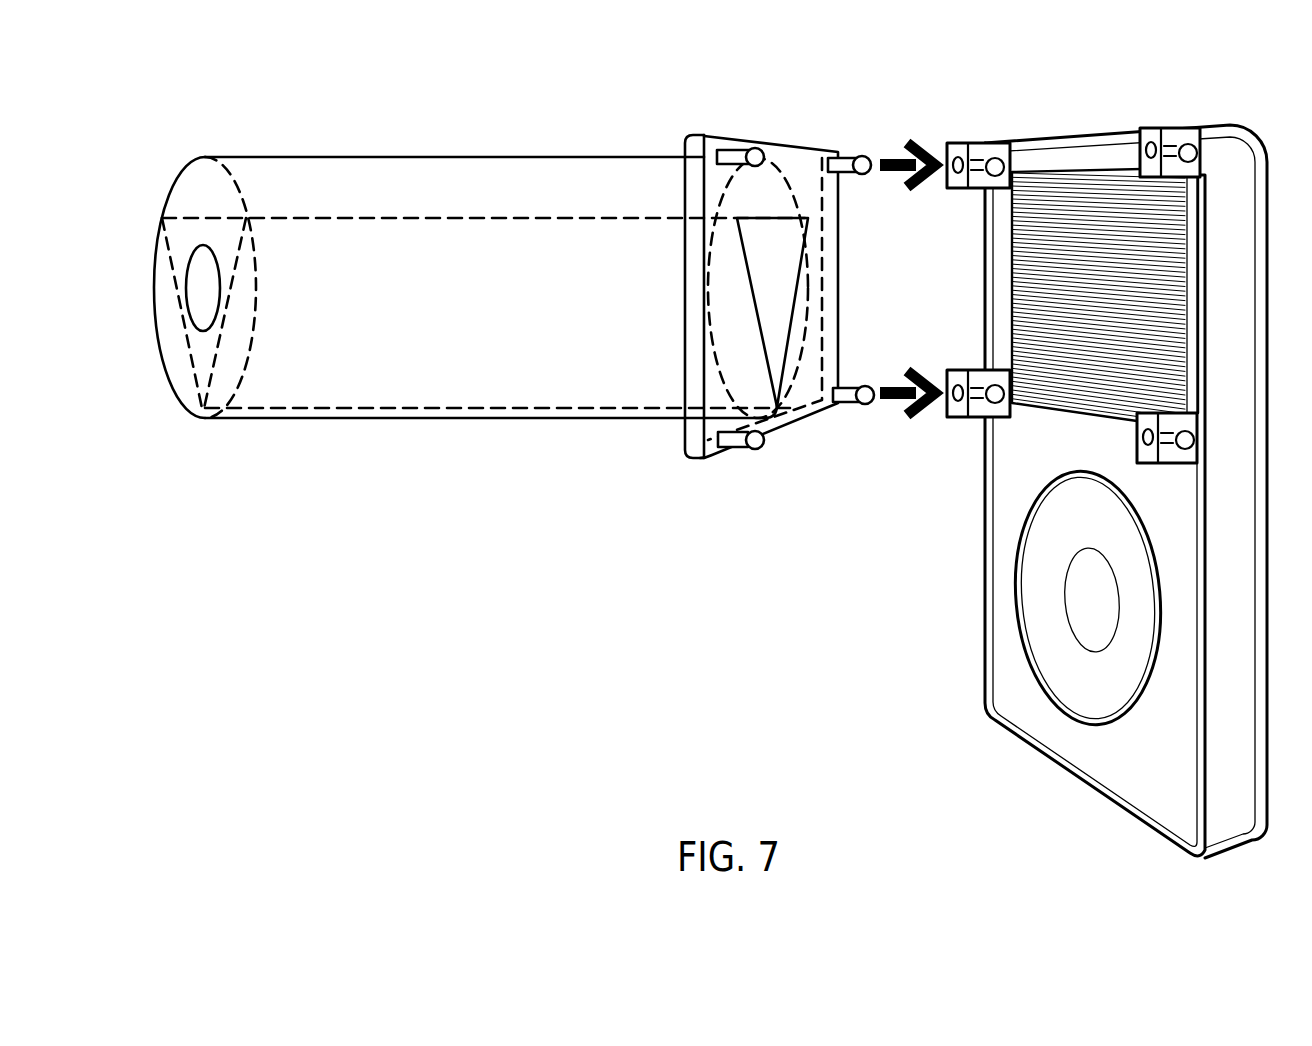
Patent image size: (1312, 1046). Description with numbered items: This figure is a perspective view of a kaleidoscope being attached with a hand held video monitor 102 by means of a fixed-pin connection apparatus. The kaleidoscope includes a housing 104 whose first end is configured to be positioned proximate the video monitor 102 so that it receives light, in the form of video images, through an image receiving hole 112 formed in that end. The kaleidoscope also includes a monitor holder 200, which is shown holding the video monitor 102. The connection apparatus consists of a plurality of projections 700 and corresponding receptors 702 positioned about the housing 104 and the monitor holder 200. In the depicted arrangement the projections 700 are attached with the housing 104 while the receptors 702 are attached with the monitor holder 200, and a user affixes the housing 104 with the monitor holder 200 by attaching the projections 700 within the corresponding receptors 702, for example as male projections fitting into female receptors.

The housing 104 is at (415, 157).
The image receiving hole 112 is at (758, 303).
The projections 700 is at (862, 155).
The receptors 702 is at (988, 143).
The monitor holder 200 is at (1247, 127).
The video monitor 102 is at (1080, 400).